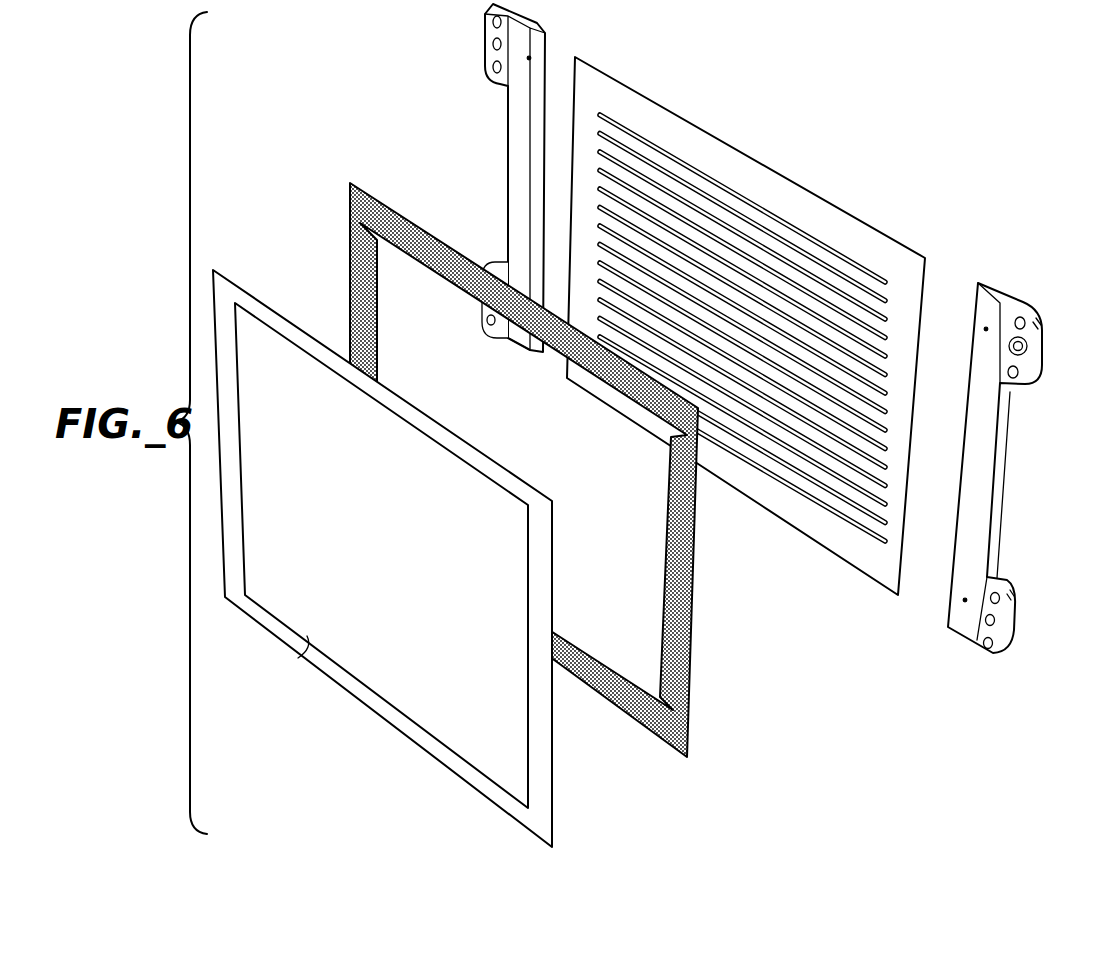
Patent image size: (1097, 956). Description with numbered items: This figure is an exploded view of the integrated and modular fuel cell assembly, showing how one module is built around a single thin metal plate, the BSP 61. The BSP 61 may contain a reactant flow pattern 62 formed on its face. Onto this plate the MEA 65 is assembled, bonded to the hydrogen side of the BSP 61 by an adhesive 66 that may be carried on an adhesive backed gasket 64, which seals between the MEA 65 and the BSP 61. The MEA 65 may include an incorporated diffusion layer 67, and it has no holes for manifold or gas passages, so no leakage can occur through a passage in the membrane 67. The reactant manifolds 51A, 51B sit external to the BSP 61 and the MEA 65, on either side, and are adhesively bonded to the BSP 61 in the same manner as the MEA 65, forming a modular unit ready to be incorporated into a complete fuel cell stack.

The reactant manifold 51A is at (1005, 470).
The reactant manifold 51B is at (506, 157).
The BSP 61 is at (678, 115).
The reactant flow pattern 62 is at (603, 114).
The adhesive backed gasket 64 is at (372, 190).
The MEA 65 is at (260, 303).
The adhesive 66 is at (222, 268).
The diffusion layer 67 is at (302, 652).